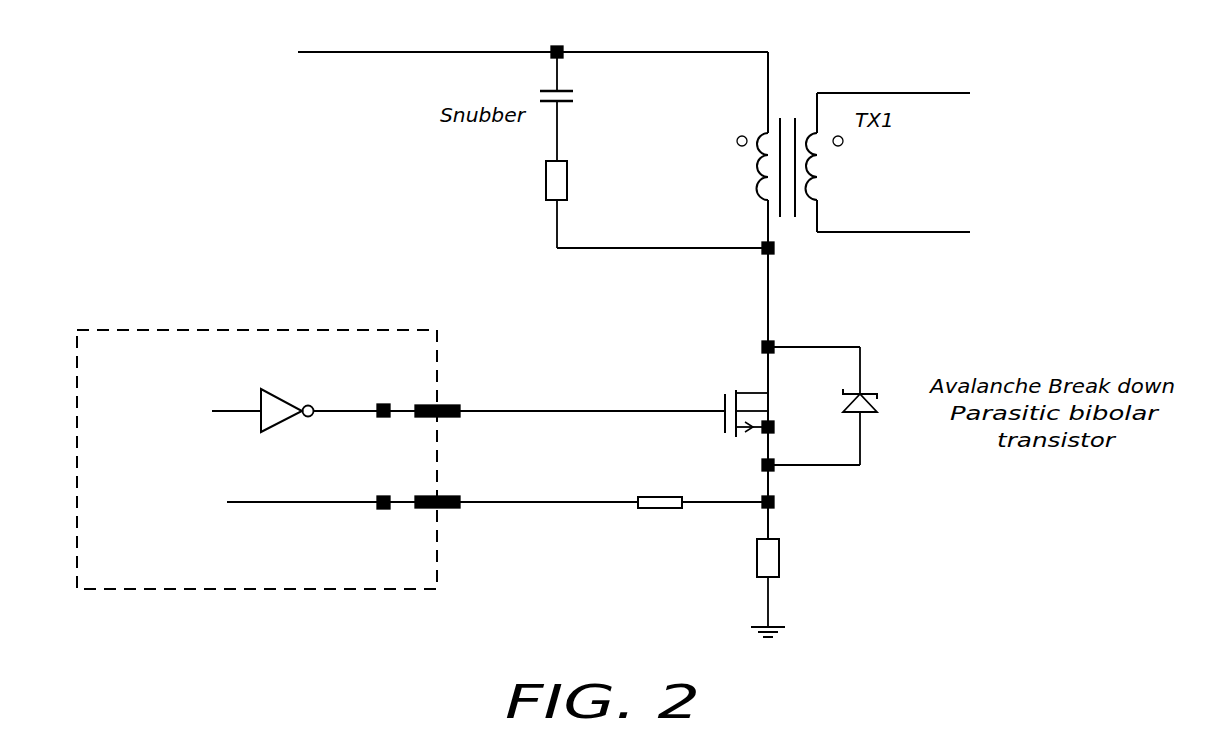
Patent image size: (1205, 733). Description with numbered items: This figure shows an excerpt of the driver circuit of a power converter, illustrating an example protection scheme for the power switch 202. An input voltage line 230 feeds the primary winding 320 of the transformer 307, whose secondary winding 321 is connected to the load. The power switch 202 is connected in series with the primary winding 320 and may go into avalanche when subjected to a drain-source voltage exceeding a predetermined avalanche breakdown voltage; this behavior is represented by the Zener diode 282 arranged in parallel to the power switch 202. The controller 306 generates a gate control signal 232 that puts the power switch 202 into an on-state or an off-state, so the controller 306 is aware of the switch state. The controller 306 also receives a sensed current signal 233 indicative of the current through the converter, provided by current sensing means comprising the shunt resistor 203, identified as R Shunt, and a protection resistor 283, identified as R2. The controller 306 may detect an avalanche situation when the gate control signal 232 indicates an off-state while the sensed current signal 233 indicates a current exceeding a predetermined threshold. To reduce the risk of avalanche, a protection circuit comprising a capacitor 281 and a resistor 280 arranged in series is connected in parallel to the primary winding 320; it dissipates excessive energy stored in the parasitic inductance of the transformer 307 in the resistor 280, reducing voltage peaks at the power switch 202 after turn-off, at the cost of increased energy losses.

The input voltage line Vin 230 is at (372, 54).
The capacitor 281 is at (568, 107).
The resistor 280 is at (535, 194).
The primary winding 320 is at (753, 152).
The transformer secondary winding S1 321 is at (818, 145).
The transformer 307 is at (855, 194).
The controller 306 is at (218, 328).
The gate control signal 232 is at (576, 408).
The sensed current signal 233 is at (518, 500).
The protection resistor 283 is at (657, 496).
The power switch 202 is at (748, 386).
The Zener diode 282 is at (872, 387).
The shunt resistor 203 is at (779, 539).